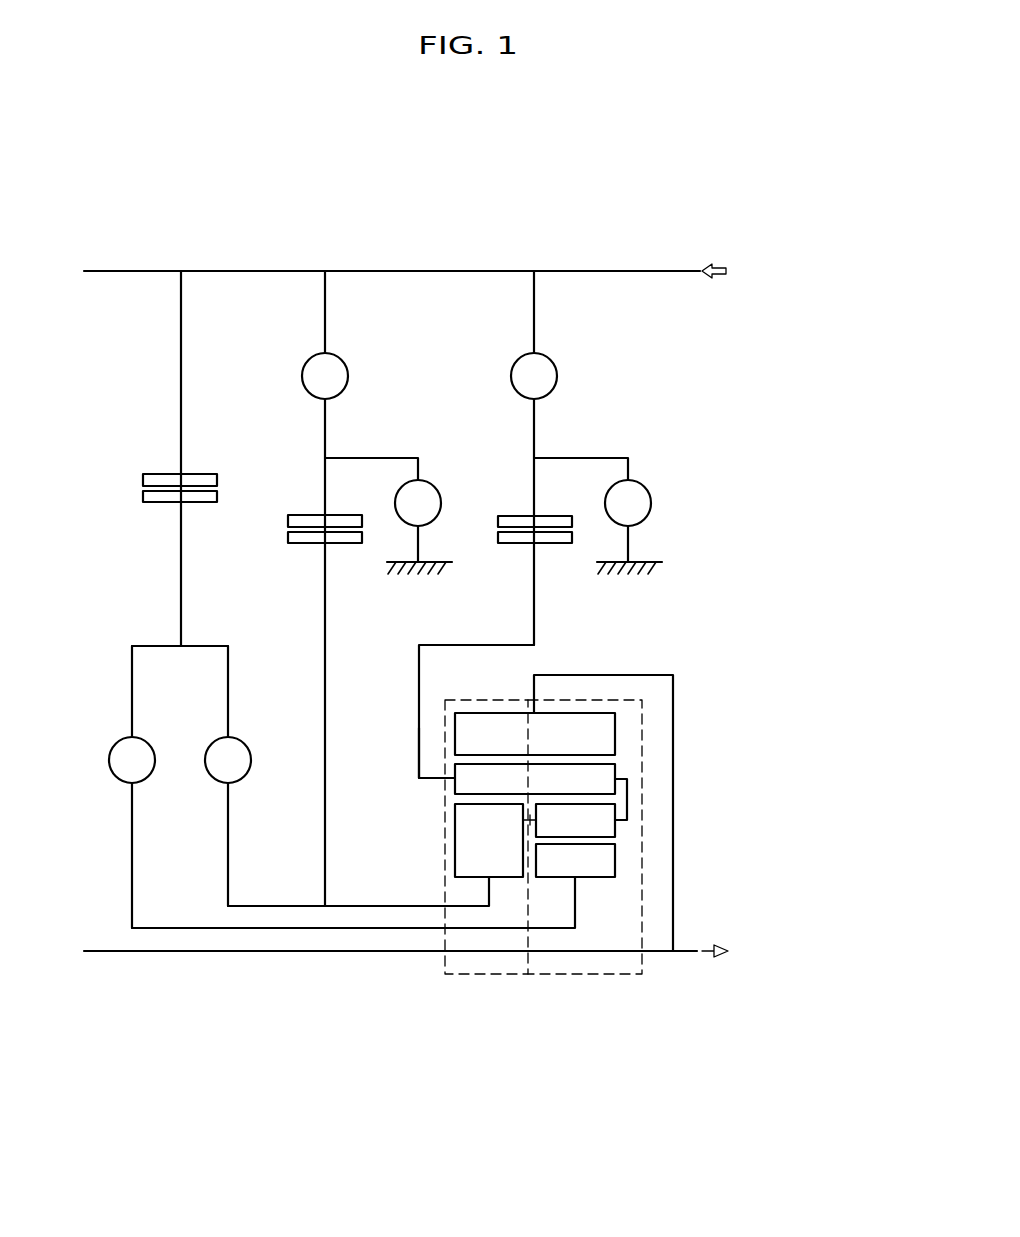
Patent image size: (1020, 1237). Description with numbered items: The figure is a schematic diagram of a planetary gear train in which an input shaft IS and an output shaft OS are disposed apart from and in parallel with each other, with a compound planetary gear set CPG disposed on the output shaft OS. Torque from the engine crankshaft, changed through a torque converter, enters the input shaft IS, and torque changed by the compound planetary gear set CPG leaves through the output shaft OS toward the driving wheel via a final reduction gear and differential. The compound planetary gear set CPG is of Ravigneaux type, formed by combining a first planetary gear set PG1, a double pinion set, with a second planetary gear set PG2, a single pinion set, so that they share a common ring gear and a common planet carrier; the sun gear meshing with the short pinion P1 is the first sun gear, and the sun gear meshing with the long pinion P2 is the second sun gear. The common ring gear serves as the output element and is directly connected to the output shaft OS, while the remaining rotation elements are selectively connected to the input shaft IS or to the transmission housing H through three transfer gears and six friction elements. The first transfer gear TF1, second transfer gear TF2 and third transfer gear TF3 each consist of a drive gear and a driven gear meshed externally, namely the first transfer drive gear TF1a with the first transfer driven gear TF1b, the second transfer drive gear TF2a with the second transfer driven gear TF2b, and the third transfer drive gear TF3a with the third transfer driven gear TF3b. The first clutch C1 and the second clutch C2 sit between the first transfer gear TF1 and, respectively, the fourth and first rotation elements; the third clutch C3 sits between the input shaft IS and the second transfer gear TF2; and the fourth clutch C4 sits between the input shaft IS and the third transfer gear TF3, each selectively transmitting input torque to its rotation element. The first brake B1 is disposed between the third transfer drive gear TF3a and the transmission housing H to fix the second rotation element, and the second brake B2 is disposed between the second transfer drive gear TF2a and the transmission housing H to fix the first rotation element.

The input shaft IS is at (645, 270).
The output shaft OS is at (686, 955).
The first clutch C1 is at (132, 787).
The second clutch C2 is at (228, 776).
The third clutch C3 is at (325, 376).
The fourth clutch C4 is at (534, 376).
The first brake B1 is at (628, 521).
The second brake B2 is at (418, 521).
The transmission housing H is at (444, 566).
The first transfer gear TF1 is at (140, 536).
The first transfer drive gear TF1a is at (143, 480).
The first transfer driven gear TF1b is at (143, 496).
The second transfer gear TF2 is at (279, 578).
The second transfer drive gear TF2a is at (288, 521).
The second transfer driven gear TF2b is at (288, 537).
The third transfer gear TF3 is at (497, 473).
The third transfer drive gear TF3a is at (498, 521).
The third transfer driven gear TF3b is at (498, 538).
The compound planetary gear set CPG is at (492, 914).
The first planetary gear set PG1 is at (592, 976).
The second planetary gear set PG2 is at (487, 976).
The short pinion P1 is at (575, 820).
The long pinion P2 is at (541, 792).